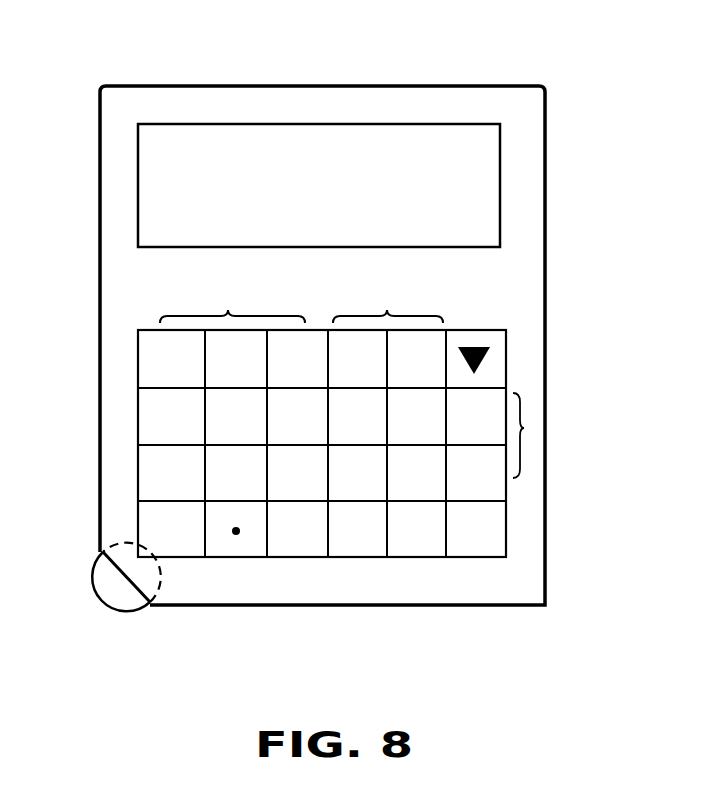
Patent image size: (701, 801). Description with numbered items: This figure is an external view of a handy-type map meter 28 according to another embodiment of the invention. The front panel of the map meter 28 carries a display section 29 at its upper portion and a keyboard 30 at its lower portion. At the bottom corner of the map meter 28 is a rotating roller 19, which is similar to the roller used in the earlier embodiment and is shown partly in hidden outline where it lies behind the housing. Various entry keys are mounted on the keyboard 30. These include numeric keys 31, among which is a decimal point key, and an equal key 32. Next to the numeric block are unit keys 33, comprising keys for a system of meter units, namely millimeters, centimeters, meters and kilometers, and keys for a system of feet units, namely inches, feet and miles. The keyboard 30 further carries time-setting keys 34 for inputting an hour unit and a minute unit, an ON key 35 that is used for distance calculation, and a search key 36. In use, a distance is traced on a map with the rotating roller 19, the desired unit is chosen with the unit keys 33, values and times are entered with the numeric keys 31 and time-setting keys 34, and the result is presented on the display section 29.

The rotating roller 19 is at (102, 582).
The map meter 28 is at (348, 86).
The display section 29 is at (482, 158).
The keyboard 30 is at (507, 535).
The numeric keys 31 is at (225, 308).
The equal key 32 is at (298, 550).
The unit keys 33 is at (387, 310).
The time-setting keys 34 is at (524, 428).
The ON key 35 is at (478, 550).
The search key 36 is at (492, 369).